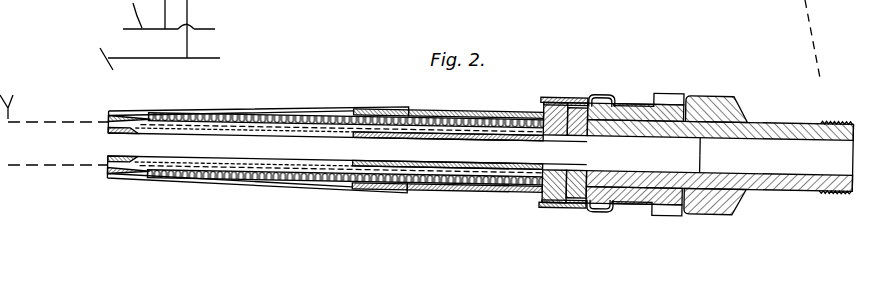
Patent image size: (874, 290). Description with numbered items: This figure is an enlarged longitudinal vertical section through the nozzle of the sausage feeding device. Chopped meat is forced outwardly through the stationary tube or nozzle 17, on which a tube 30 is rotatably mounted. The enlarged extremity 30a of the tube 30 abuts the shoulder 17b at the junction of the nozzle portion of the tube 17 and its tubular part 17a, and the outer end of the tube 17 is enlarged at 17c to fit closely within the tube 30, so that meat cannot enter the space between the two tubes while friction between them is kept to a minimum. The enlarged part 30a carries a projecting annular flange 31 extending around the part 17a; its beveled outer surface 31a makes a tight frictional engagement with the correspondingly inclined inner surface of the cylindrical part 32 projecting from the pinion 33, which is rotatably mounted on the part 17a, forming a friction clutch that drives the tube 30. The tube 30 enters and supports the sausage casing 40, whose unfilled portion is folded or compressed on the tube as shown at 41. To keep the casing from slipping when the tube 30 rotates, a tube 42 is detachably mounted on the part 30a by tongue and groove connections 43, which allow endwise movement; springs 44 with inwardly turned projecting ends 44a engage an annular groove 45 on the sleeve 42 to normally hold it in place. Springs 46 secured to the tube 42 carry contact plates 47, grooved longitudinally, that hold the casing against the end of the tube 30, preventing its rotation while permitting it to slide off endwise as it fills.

The tube or nozzle 17 is at (293, 113).
The tubular part 17a is at (770, 121).
The shoulder 17b is at (565, 203).
The enlarged outer end 17c is at (110, 131).
The rotatable tube 30 is at (517, 110).
The enlarged extremity 30a is at (560, 99).
The annular flange 31 is at (628, 103).
The beveled outer surface 31a is at (608, 97).
The cylindrical part 32 is at (641, 102).
The pinion 33 is at (688, 99).
The sausage casing 40 is at (58, 125).
The folded or compressed casing portion 41 is at (354, 156).
The tube 42 is at (427, 110).
The tongue and groove connections 43 is at (547, 99).
The springs 44 is at (584, 98).
The inwardly turned projecting ends 44a is at (610, 212).
The annular groove 45 is at (617, 207).
The springs 46 is at (250, 110).
The contact plates 47 is at (127, 117).